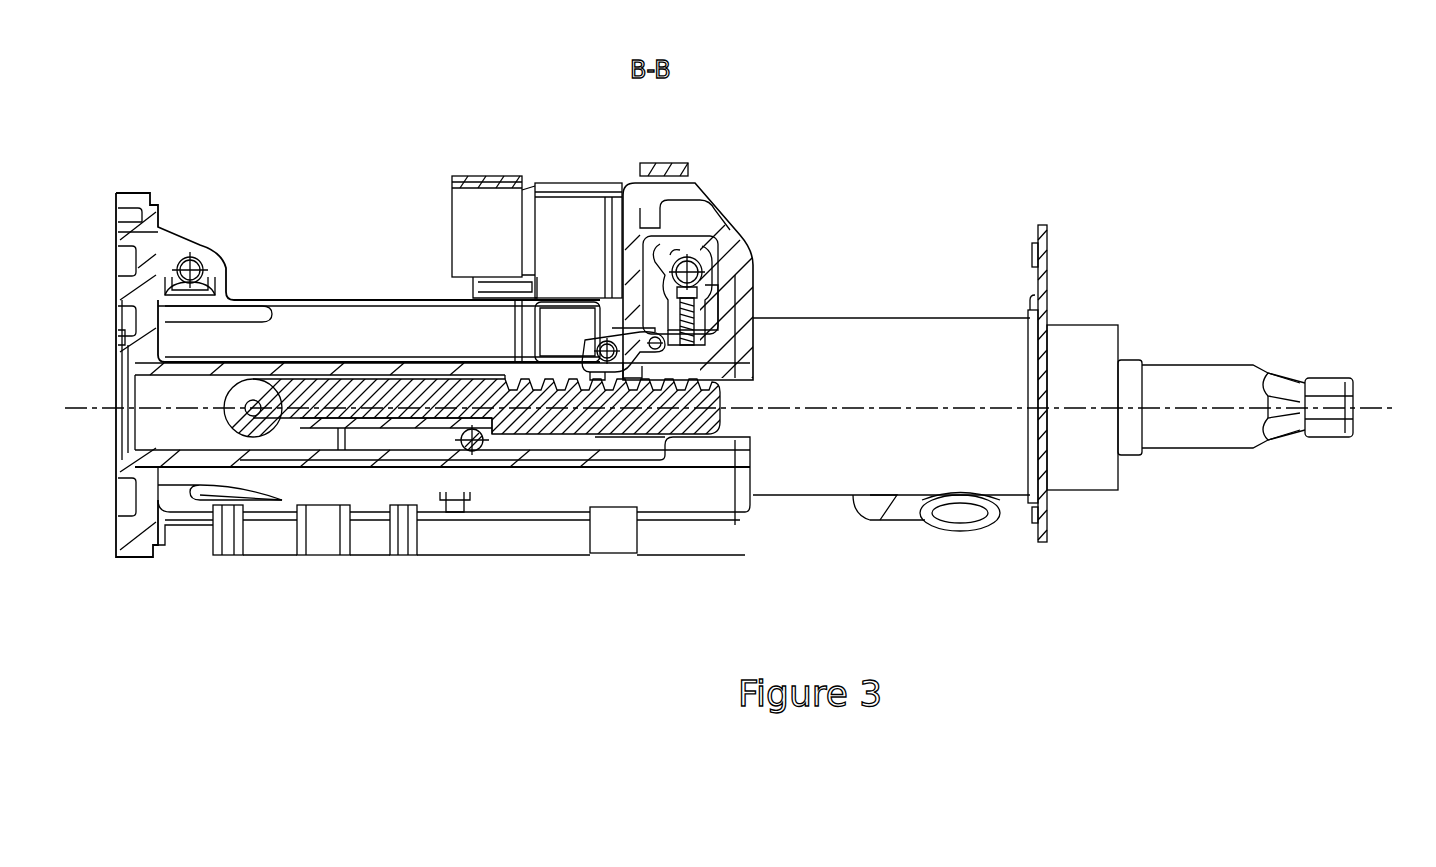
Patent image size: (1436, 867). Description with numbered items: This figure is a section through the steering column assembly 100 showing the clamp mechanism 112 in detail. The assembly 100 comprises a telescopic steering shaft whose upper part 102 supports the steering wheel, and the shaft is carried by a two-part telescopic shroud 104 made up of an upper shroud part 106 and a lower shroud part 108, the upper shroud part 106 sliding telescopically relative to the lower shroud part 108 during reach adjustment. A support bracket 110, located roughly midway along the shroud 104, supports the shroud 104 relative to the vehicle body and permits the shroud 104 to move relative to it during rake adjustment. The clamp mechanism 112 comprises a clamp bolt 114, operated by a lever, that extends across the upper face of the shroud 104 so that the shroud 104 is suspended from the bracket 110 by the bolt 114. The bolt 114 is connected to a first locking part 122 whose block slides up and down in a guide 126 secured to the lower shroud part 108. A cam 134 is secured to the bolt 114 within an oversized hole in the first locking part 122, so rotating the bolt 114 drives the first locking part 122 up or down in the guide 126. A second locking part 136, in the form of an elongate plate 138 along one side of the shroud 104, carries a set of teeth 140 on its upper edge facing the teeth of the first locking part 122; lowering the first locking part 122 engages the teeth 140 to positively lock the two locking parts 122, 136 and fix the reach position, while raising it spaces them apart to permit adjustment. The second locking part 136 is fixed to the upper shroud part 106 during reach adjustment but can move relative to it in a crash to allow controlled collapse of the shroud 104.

The steering column assembly 100 is at (1182, 120).
The upper part of steering shaft 102 is at (1347, 375).
The shroud 104 is at (843, 210).
The upper shroud part 106 is at (1120, 337).
The lower shroud part 108 is at (287, 298).
The support bracket 110 is at (562, 190).
The clamp mechanism 112 is at (725, 245).
The clamp bolt 114 is at (690, 254).
The first locking part 122 is at (724, 284).
The guide 126 is at (724, 315).
The cam 134 is at (672, 256).
The second locking part 136 is at (718, 438).
The elongate plate 138 is at (550, 405).
The teeth 140 is at (653, 397).